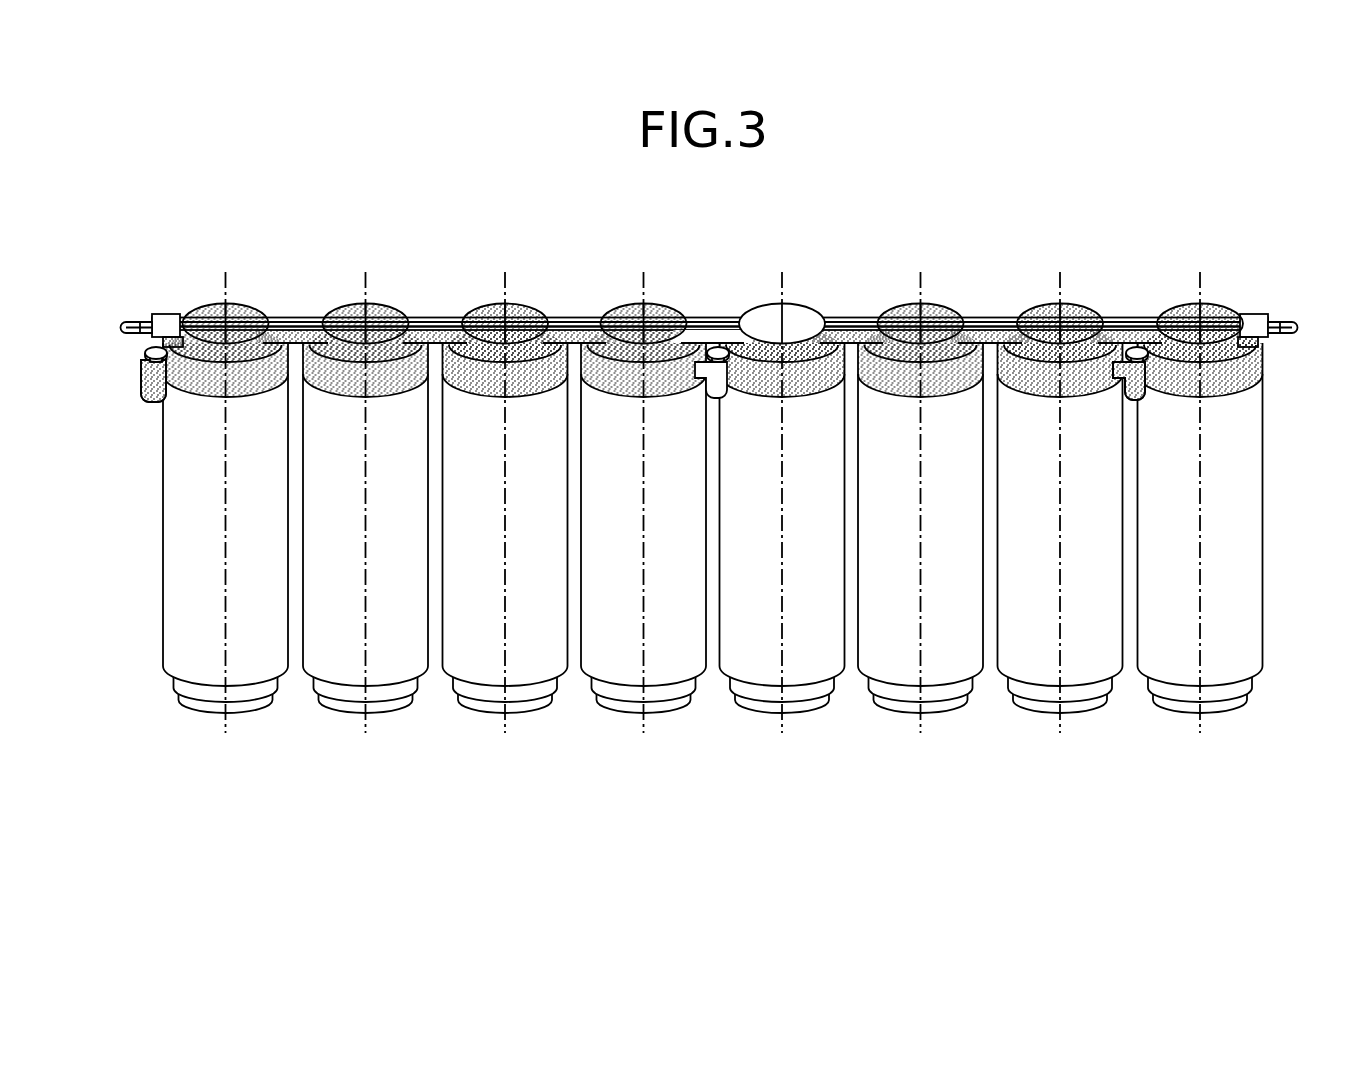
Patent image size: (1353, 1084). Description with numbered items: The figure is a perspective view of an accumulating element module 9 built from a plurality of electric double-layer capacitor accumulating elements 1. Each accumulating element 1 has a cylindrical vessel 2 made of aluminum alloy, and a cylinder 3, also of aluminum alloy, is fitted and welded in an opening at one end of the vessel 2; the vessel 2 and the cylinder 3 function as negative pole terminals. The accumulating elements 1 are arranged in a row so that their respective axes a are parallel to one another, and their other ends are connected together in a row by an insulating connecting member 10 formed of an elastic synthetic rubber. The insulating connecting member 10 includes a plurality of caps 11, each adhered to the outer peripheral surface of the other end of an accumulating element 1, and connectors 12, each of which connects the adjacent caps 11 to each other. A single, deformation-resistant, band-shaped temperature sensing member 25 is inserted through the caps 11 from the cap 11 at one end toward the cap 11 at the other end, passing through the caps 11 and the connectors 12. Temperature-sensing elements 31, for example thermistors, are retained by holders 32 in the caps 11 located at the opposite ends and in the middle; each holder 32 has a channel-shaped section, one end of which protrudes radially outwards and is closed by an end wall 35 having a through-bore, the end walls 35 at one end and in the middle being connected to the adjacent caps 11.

The accumulating element 1 is at (751, 520).
The cylindrical vessel 2 is at (1265, 517).
The cylinder 3 is at (1258, 677).
The accumulating element module 9 is at (707, 341).
The insulating connecting member 10 is at (801, 302).
The cap 11 is at (693, 282).
The connector 12 is at (713, 284).
The temperature sensing member 25 is at (1287, 320).
The temperature-sensing element 31 is at (610, 311).
The holder 32 is at (616, 419).
The end wall 35 is at (610, 393).
The axis a is at (709, 502).